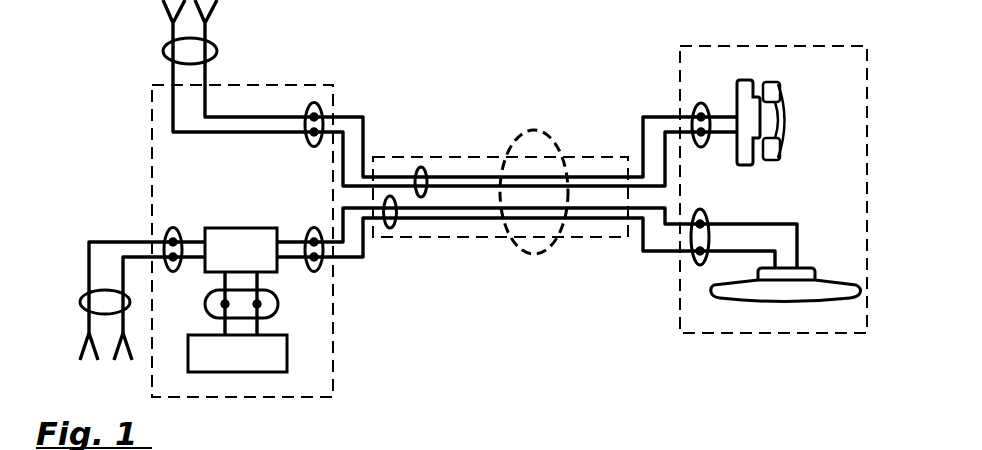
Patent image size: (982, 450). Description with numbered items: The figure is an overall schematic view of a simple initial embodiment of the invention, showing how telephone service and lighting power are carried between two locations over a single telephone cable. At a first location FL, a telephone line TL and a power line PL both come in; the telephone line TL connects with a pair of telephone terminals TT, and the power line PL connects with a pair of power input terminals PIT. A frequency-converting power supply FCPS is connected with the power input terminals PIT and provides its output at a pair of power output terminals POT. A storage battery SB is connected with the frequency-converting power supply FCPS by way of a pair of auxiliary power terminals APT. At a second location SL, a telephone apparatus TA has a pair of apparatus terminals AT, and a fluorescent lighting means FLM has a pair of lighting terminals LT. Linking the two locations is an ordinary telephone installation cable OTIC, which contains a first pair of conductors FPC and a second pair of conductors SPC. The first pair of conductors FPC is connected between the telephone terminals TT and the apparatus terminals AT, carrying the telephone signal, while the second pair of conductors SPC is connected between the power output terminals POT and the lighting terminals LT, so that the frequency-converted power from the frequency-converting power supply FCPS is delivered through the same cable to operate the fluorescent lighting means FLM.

The telephone line TL is at (217, 52).
The telephone terminals TT is at (308, 146).
The power input terminals PIT is at (173, 222).
The power output terminals POT is at (313, 227).
The power line PL is at (80, 301).
The frequency-converting power supply FCPS is at (241, 250).
The auxiliary power terminals APT is at (279, 302).
The storage battery SB is at (237, 353).
The first location FL is at (343, 382).
The first pair of conductors FPC is at (421, 167).
The second pair of conductors SPC is at (390, 228).
The ordinary telephone installation cable OTIC is at (537, 130).
The apparatus terminals AT is at (692, 110).
The telephone apparatus TA is at (752, 78).
The lighting terminals LT is at (697, 266).
The fluorescent lighting means FLM is at (762, 304).
The second location SL is at (670, 322).